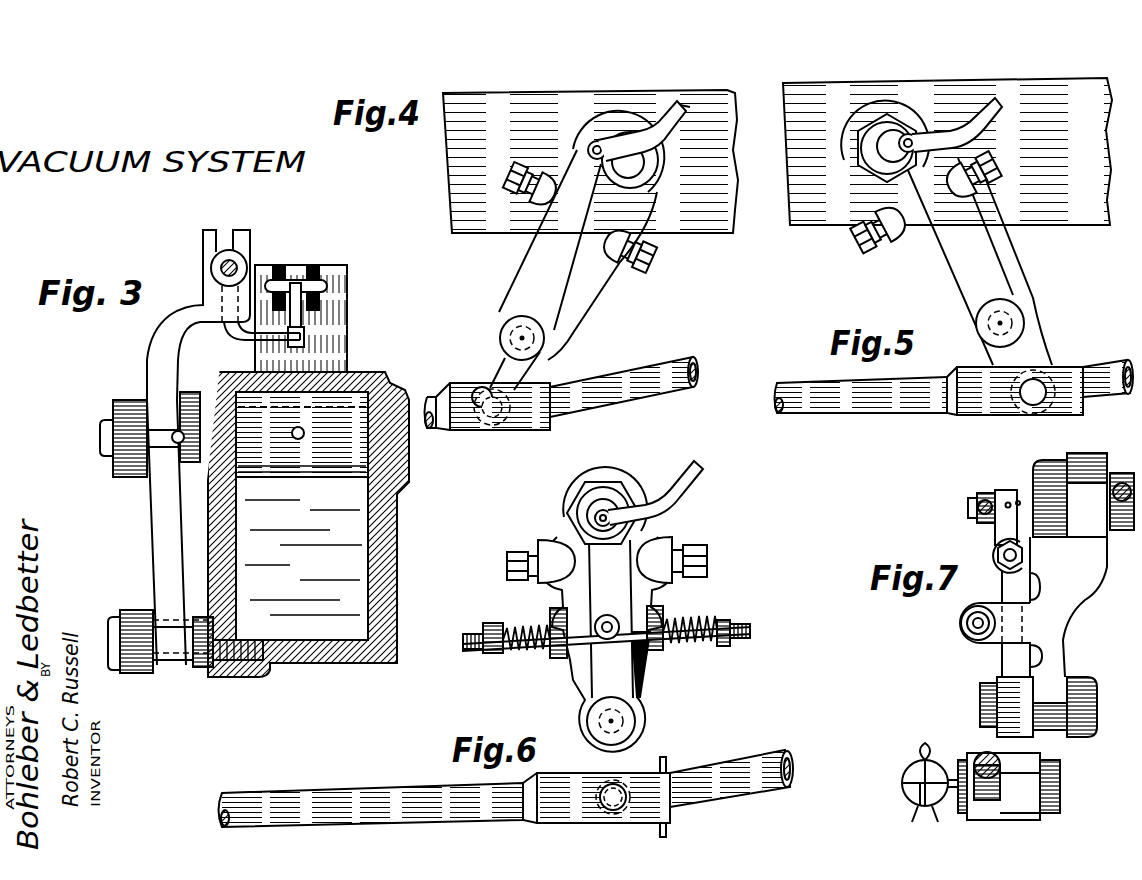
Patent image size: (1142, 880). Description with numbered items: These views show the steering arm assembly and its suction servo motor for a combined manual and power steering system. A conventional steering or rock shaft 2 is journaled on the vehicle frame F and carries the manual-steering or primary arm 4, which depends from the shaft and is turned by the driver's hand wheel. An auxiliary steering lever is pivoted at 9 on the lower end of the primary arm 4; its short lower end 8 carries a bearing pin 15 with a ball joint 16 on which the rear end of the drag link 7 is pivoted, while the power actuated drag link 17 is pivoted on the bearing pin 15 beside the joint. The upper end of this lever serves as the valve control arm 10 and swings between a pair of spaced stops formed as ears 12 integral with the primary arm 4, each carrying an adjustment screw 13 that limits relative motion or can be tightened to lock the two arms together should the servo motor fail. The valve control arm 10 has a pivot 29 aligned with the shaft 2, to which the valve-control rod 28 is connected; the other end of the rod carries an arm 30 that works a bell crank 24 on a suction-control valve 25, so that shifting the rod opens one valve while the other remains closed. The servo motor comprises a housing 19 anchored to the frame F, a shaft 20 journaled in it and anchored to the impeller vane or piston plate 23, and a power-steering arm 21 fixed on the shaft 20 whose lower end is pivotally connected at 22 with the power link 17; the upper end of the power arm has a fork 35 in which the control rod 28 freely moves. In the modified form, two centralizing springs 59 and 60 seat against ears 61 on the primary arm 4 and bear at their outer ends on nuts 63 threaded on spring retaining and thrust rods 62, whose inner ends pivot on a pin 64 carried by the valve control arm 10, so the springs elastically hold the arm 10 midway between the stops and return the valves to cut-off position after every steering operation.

In FIG. 4, the steering or rock shaft 2 is at (652, 172).
In FIG. 5, the steering or rock shaft 2 is at (878, 147).
In FIG. 6, the steering or rock shaft 2 is at (625, 497).
In FIG. 7, the steering or rock shaft 2 is at (1111, 480).
In FIG. 4, the manual-steering or primary arm 4 is at (613, 114).
In FIG. 5, the manual-steering or primary arm 4 is at (1010, 272).
In FIG. 6, the manual-steering or primary arm 4 is at (641, 690).
In FIG. 7, the manual-steering or primary arm 4 is at (1080, 603).
In FIG. 4, the steering or drag link 7 is at (565, 423).
In FIG. 5, the steering or drag link 7 is at (887, 405).
In FIG. 6, the steering or drag link 7 is at (335, 800).
In FIG. 7, the steering or drag link 7 is at (902, 780).
In FIG. 4, the lower end of auxiliary arm 8 is at (489, 368).
In FIG. 5, the lower end of auxiliary arm 8 is at (1025, 358).
In FIG. 6, the lower end of auxiliary arm 8 is at (607, 830).
In FIG. 7, the lower end of auxiliary arm 8 is at (1022, 826).
In FIG. 4, the pivot 9 is at (516, 332).
In FIG. 5, the pivot 9 is at (1018, 311).
In FIG. 6, the pivot 9 is at (603, 729).
In FIG. 7, the pivot 9 is at (1093, 700).
In FIG. 4, the valve control arm 10 is at (535, 258).
In FIG. 5, the valve control arm 10 is at (972, 252).
In FIG. 6, the valve control arm 10 is at (598, 497).
In FIG. 7, the valve control arm 10 is at (1008, 490).
In FIG. 4, the stops or ears 12 is at (540, 206).
In FIG. 5, the stops or ears 12 is at (980, 199).
In FIG. 6, the stops or ears 12 is at (658, 542).
In FIG. 7, the stops or ears 12 is at (993, 548).
In FIG. 4, the adjustment screw 13 is at (508, 180).
In FIG. 5, the adjustment screw 13 is at (868, 205).
In FIG. 6, the adjustment screw 13 is at (508, 565).
In FIG. 7, the adjustment screw 13 is at (1020, 555).
In FIG. 4, the bearing pin 15 is at (483, 432).
In FIG. 7, the bearing pin 15 is at (1060, 790).
In FIG. 4, the ball joint 16 is at (518, 430).
In FIG. 3, the power actuated drag link 17 is at (128, 670).
In FIG. 4, the power actuated drag link 17 is at (653, 378).
In FIG. 5, the power actuated drag link 17 is at (1103, 400).
In FIG. 6, the power actuated drag link 17 is at (730, 768).
In FIG. 7, the power actuated drag link 17 is at (980, 755).
In FIG. 3, the housing 19 is at (375, 372).
In FIG. 3, the shaft 20 is at (100, 440).
In FIG. 3, the power-steering arm 21 is at (160, 538).
In FIG. 3, the pivotal connection 22 is at (135, 622).
In FIG. 3, the impeller vane or piston plate 23 is at (312, 618).
In FIG. 3, the bell crank 24 is at (302, 312).
In FIG. 3, the suction-control valve 25 is at (347, 290).
In FIG. 3, the valve-control rod 28 is at (243, 262).
In FIG. 4, the valve-control rod 28 is at (686, 103).
In FIG. 5, the valve-control rod 28 is at (979, 98).
In FIG. 6, the valve-control rod 28 is at (702, 477).
In FIG. 7, the valve-control rod 28 is at (980, 500).
In FIG. 4, the pivot 29 is at (590, 148).
In FIG. 5, the pivot 29 is at (911, 137).
In FIG. 6, the pivot 29 is at (596, 517).
In FIG. 7, the pivot 29 is at (968, 508).
In FIG. 3, the arm 30 is at (241, 336).
In FIG. 3, the fork 35 is at (211, 230).
In FIG. 6, the centralizing spring 59 is at (542, 650).
In FIG. 6, the centralizing spring 60 is at (703, 650).
In FIG. 6, the ears 61 is at (560, 655).
In FIG. 7, the ears 61 is at (985, 643).
In FIG. 6, the spring retaining and thrust rod 62 is at (465, 645).
In FIG. 7, the spring retaining and thrust rod 62 is at (973, 620).
In FIG. 6, the nut or head 63 is at (488, 628).
In FIG. 7, the nut or head 63 is at (961, 631).
In FIG. 6, the pin 64 is at (585, 652).
In FIG. 4, the vehicle frame F is at (738, 170).